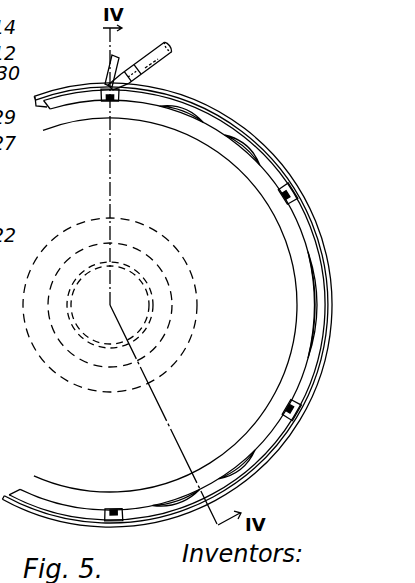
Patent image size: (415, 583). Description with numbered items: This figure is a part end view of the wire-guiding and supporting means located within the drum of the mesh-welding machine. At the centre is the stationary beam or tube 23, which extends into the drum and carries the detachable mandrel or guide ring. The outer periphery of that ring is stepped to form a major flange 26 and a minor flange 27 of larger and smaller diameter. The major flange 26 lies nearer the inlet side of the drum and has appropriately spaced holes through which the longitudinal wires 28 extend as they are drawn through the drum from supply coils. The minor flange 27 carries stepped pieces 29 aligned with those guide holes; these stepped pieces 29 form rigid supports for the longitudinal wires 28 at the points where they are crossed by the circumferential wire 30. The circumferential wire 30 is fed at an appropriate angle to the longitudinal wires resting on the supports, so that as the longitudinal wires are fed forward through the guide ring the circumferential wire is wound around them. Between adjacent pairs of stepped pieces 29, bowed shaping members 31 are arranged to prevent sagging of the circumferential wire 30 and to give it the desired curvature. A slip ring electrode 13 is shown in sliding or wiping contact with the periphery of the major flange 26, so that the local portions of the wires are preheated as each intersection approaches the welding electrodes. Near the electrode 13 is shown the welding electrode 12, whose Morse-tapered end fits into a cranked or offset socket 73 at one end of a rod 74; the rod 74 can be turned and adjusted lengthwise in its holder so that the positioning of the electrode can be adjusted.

The tool 12 is at (118, 82).
The slip ring electrode 13 is at (104, 72).
The stationary beam or tube 23 is at (85, 345).
The major flange 26 is at (233, 123).
The minor flange 27 is at (243, 170).
The longitudinal wires 28 is at (101, 101).
The stepped pieces 29 is at (112, 100).
The circumferential wire 30 is at (268, 157).
The shaping members 31 is at (205, 128).
The socket 73 is at (157, 72).
The rod 74 is at (176, 48).